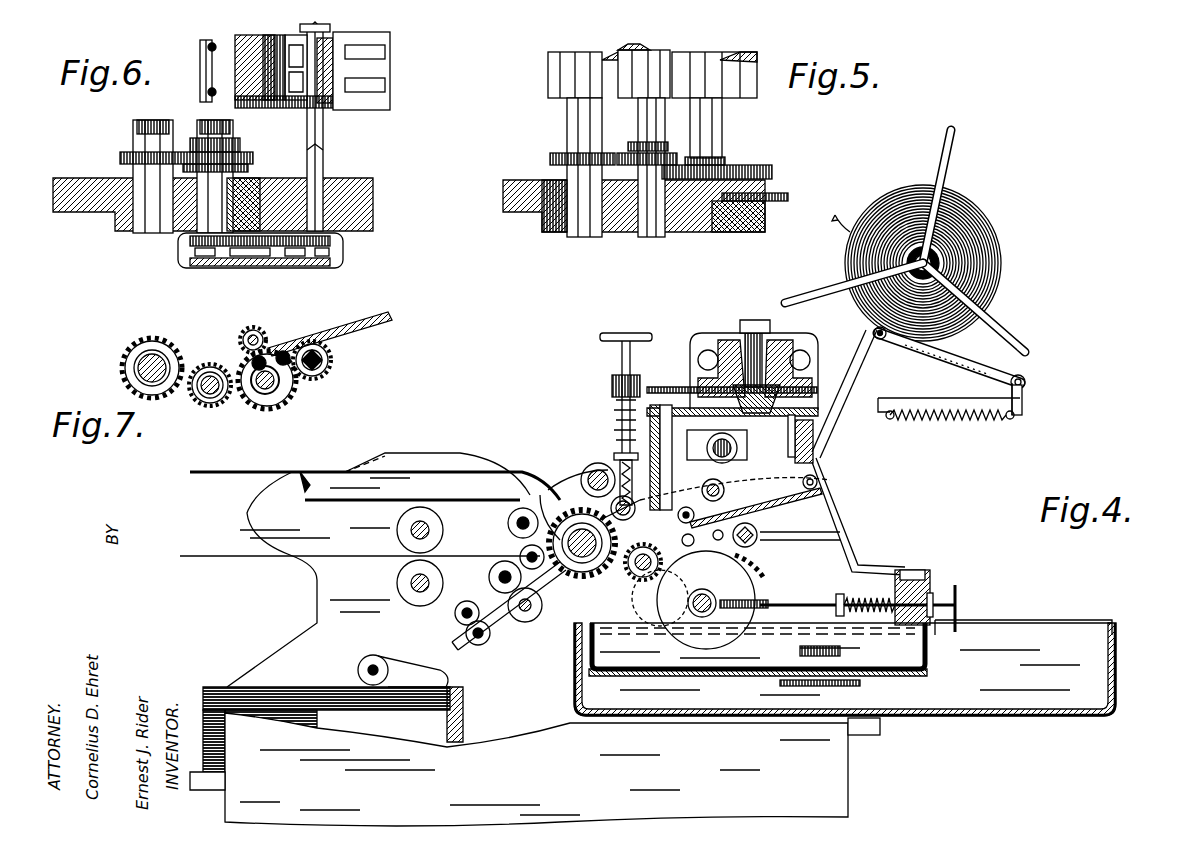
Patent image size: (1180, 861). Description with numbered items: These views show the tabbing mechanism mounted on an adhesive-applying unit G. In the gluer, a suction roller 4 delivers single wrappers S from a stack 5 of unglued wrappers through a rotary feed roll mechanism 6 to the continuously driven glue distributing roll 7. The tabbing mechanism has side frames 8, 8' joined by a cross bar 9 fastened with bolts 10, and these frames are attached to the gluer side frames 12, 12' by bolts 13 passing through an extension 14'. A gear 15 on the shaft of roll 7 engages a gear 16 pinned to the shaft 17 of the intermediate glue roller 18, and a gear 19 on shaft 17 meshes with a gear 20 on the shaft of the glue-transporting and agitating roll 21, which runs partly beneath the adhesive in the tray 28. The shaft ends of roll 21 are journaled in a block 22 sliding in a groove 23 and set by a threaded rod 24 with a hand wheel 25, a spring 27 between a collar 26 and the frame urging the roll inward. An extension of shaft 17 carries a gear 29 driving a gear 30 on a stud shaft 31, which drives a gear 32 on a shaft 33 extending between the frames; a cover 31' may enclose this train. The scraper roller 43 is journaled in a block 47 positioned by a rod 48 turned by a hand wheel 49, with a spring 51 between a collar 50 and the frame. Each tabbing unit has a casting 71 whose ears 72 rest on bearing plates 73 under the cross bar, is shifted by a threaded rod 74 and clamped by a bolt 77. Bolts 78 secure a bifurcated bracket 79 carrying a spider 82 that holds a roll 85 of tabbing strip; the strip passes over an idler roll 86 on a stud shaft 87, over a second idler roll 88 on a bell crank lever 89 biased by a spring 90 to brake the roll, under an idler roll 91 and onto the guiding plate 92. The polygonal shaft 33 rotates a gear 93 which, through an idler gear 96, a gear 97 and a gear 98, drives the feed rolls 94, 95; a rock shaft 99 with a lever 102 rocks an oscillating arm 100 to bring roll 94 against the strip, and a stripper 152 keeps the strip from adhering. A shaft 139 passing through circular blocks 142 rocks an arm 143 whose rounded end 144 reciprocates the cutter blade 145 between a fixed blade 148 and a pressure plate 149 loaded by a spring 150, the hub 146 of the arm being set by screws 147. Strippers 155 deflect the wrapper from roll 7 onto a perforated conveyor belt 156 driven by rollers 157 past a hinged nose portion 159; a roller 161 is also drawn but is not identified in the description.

In FIG. 4, the suction roller 4 is at (432, 660).
In FIG. 4, the stack of unglued wrappers 5 is at (310, 690).
In FIG. 4, the rotary feed roll mechanism 6 is at (500, 642).
In FIG. 5, the glue distributing roll 7 is at (560, 72).
In FIG. 4, the glue distributing roll 7 is at (524, 552).
In FIG. 6, the side frame 8 is at (216, 226).
In FIG. 5, the side frame 8 is at (634, 227).
In FIG. 4, the side frame 8' is at (954, 540).
In FIG. 4, the cross bar 9 is at (778, 333).
In FIG. 4, the bolts 10 is at (710, 350).
In FIG. 4, the side frame of the gluer 12 is at (535, 756).
In FIG. 4, the side frame of the gluer 12' is at (900, 787).
In FIG. 4, the bolts 13 is at (900, 682).
In FIG. 4, the extension 14' is at (870, 747).
In FIG. 6, the gear 15 is at (122, 158).
In FIG. 7, the gear 15 is at (120, 360).
In FIG. 5, the gear 15 is at (552, 152).
In FIG. 4, the gear 15 is at (578, 575).
In FIG. 6, the gear 16 is at (160, 135).
In FIG. 7, the gear 16 is at (195, 398).
In FIG. 5, the gear 16 is at (620, 152).
In FIG. 4, the gear 16 is at (630, 575).
In FIG. 6, the shaft 17 is at (215, 140).
In FIG. 7, the shaft 17 is at (210, 395).
In FIG. 5, the shaft 17 is at (652, 125).
In FIG. 5, the intermediate glue roller 18 is at (640, 68).
In FIG. 4, the intermediate glue roller 18 is at (712, 600).
In FIG. 6, the gear 19 is at (235, 168).
In FIG. 5, the gear 19 is at (600, 225).
In FIG. 4, the gear 19 is at (640, 580).
In FIG. 5, the gear 20 is at (765, 168).
In FIG. 4, the gear 20 is at (665, 640).
In FIG. 5, the glue-transporting and agitating roll 21 is at (745, 98).
In FIG. 4, the glue-transporting and agitating roll 21 is at (705, 650).
In FIG. 5, the block 22 is at (768, 212).
In FIG. 4, the block 22 is at (748, 630).
In FIG. 5, the groove 23 is at (662, 225).
In FIG. 4, the groove 23 is at (628, 640).
In FIG. 5, the threaded rod 24 is at (788, 195).
In FIG. 4, the threaded rod 24 is at (790, 625).
In FIG. 4, the hand wheel 25 is at (958, 585).
In FIG. 4, the collar 26 is at (870, 600).
In FIG. 4, the spring 27 is at (916, 575).
In FIG. 4, the reservoir or tray 28 is at (928, 664).
In FIG. 6, the gear 29 is at (235, 258).
In FIG. 7, the gear 29 is at (230, 402).
In FIG. 6, the gear 30 is at (290, 258).
In FIG. 7, the gear 30 is at (285, 402).
In FIG. 6, the stud shaft 31 is at (263, 192).
In FIG. 7, the stud shaft 31 is at (293, 388).
In FIG. 6, the housing or cover 31' is at (167, 279).
In FIG. 6, the gear 32 is at (340, 260).
In FIG. 7, the gear 32 is at (330, 366).
In FIG. 6, the shaft 33 is at (322, 152).
In FIG. 4, the shaft 33 is at (752, 542).
In FIG. 4, the roller 43 is at (600, 440).
In FIG. 4, the block 47 is at (581, 474).
In FIG. 4, the rod 48 is at (612, 410).
In FIG. 4, the hand wheel 49 is at (606, 340).
In FIG. 4, the collar 50 is at (605, 450).
In FIG. 4, the spring 51 is at (612, 460).
In FIG. 4, the casting 71 is at (872, 490).
In FIG. 4, the ears 72 is at (728, 345).
In FIG. 4, the bearing plates 73 is at (695, 368).
In FIG. 4, the threaded rod 74 is at (752, 320).
In FIG. 4, the bolt 77 is at (790, 300).
In FIG. 4, the bolts 78 is at (838, 440).
In FIG. 4, the bifurcated bracket member 79 is at (948, 405).
In FIG. 4, the spider 82 is at (952, 140).
In FIG. 4, the roll of tabbing material 85 is at (1000, 258).
In FIG. 4, the idler roll 86 is at (1022, 392).
In FIG. 4, the stud shaft 87 is at (1024, 380).
In FIG. 4, the idler roll 88 is at (876, 330).
In FIG. 4, the bell crank lever 89 is at (950, 358).
In FIG. 4, the biasing spring 90 is at (985, 420).
In FIG. 4, the idler roll 91 is at (836, 474).
In FIG. 7, the plate 92 is at (365, 328).
In FIG. 6, the gear 93 is at (335, 85).
In FIG. 6, the feed roll 94 is at (330, 27).
In FIG. 4, the feed roll 94 is at (702, 490).
In FIG. 6, the feed roll 95 is at (390, 72).
In FIG. 4, the feed roll 95 is at (750, 566).
In FIG. 6, the idler gear 96 is at (300, 110).
In FIG. 7, the idler gear 96 is at (285, 350).
In FIG. 7, the gear 97 is at (252, 360).
In FIG. 6, the gear 98 is at (268, 105).
In FIG. 7, the gear 98 is at (256, 330).
In FIG. 4, the rock shaft 99 is at (848, 536).
In FIG. 4, the oscillating arm 100 is at (780, 514).
In FIG. 4, the lever 102 is at (880, 526).
In FIG. 4, the shaft 139 is at (740, 444).
In FIG. 4, the circular blocks 142 is at (870, 506).
In FIG. 4, the arm 143 is at (660, 350).
In FIG. 4, the rounded end 144 is at (620, 376).
In FIG. 6, the cutter blade 145 is at (212, 45).
In FIG. 4, the cutter blade 145 is at (612, 385).
In FIG. 4, the hub 146 is at (658, 405).
In FIG. 4, the screws 147 is at (796, 445).
In FIG. 6, the fixed blade 148 is at (228, 96).
In FIG. 6, the pressure plate 149 is at (208, 92).
In FIG. 4, the pressure plate 149 is at (612, 398).
In FIG. 6, the spring 150 is at (228, 58).
In FIG. 4, the stripper 152 is at (842, 600).
In FIG. 4, the strippers 155 is at (560, 490).
In FIG. 4, the conveyor belt 156 is at (255, 560).
In FIG. 4, the rollers 157 is at (397, 583).
In FIG. 4, the hinged nose portion 159 is at (365, 470).
In FIG. 4, the roller 161 is at (507, 522).
In FIG. 4, the wrapper S is at (240, 688).
In FIG. 4, the adhesive-applying unit G is at (1013, 601).